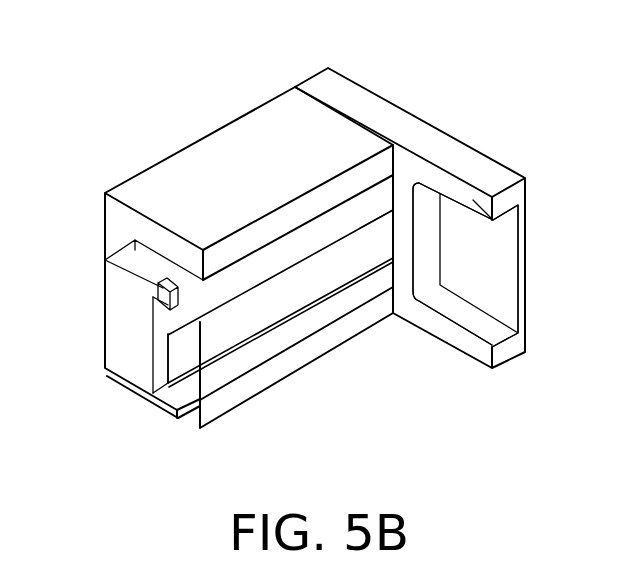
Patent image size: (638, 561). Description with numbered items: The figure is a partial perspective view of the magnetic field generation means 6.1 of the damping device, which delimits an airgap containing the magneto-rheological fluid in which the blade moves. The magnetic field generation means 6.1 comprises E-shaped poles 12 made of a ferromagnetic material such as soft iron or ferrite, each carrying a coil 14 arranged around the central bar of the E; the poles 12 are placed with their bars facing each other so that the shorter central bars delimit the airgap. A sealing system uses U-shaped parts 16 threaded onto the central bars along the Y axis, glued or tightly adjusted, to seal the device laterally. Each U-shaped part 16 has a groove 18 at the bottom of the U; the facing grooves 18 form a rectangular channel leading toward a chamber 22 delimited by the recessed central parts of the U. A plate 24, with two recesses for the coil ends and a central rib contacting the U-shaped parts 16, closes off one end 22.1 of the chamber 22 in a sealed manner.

The magnetic field generation means 6.1 is at (208, 122).
The pole 12 is at (127, 222).
The coil 14 is at (133, 322).
The U-shaped part 16 is at (252, 277).
The groove 18 is at (178, 350).
The chamber 22 is at (312, 280).
The end of the chamber 22.1 is at (380, 232).
The plate 24 is at (497, 218).